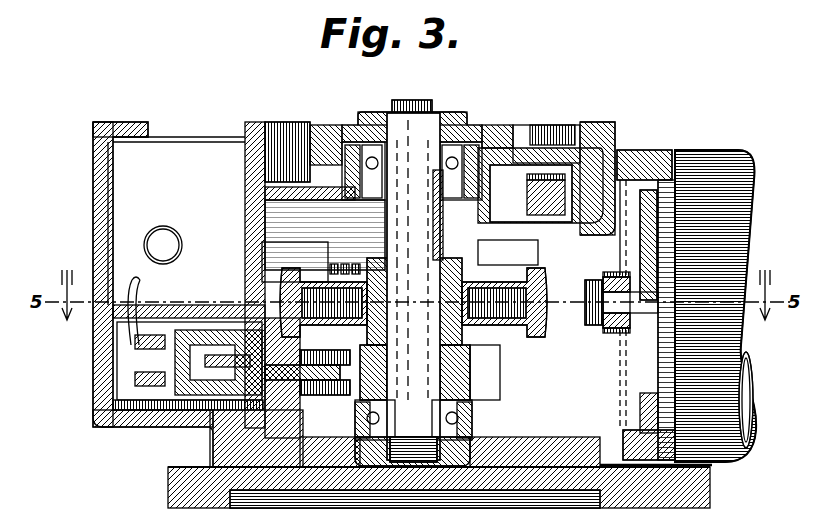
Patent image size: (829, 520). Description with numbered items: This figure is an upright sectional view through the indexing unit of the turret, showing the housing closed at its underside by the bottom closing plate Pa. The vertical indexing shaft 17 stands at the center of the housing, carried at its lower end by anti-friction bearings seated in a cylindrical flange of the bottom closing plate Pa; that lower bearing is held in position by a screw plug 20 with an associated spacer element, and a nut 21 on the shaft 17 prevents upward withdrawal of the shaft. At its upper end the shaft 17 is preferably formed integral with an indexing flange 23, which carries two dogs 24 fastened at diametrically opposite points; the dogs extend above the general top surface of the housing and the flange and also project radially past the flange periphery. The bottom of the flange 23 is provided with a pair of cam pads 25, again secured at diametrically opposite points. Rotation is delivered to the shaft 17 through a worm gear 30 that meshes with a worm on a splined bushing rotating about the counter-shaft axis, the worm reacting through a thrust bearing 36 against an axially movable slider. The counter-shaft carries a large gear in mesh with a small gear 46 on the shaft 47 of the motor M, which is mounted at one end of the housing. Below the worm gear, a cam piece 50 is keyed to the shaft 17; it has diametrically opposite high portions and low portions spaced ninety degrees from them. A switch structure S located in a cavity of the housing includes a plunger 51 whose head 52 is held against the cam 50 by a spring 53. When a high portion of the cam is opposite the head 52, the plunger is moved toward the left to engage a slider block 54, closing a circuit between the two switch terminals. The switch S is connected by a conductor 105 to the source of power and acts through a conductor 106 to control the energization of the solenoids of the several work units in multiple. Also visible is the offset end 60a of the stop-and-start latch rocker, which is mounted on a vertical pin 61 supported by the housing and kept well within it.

The vertical indexing shaft 17 is at (402, 234).
The screw plug 20 is at (490, 432).
The nut 21 is at (487, 440).
The indexing flange 23 is at (367, 114).
The dogs 24 is at (420, 102).
The cam pads 25 is at (330, 170).
The worm gear 30 is at (314, 289).
The thrust bearing 36 is at (340, 263).
The small gear 46 is at (612, 284).
The motor shaft 47 is at (645, 298).
The cam piece 50 is at (470, 368).
The plunger 51 is at (345, 380).
The head 52 is at (325, 407).
The spring 53 is at (312, 382).
The slider block 54 is at (209, 414).
The end of latch rocker arm 60a is at (565, 165).
The vertical pin 61 is at (512, 249).
The conductor 105 is at (150, 284).
The conductor 106 is at (122, 282).
The motor M is at (706, 182).
The bottom closing plate Pa is at (690, 485).
The switch structure S is at (148, 400).